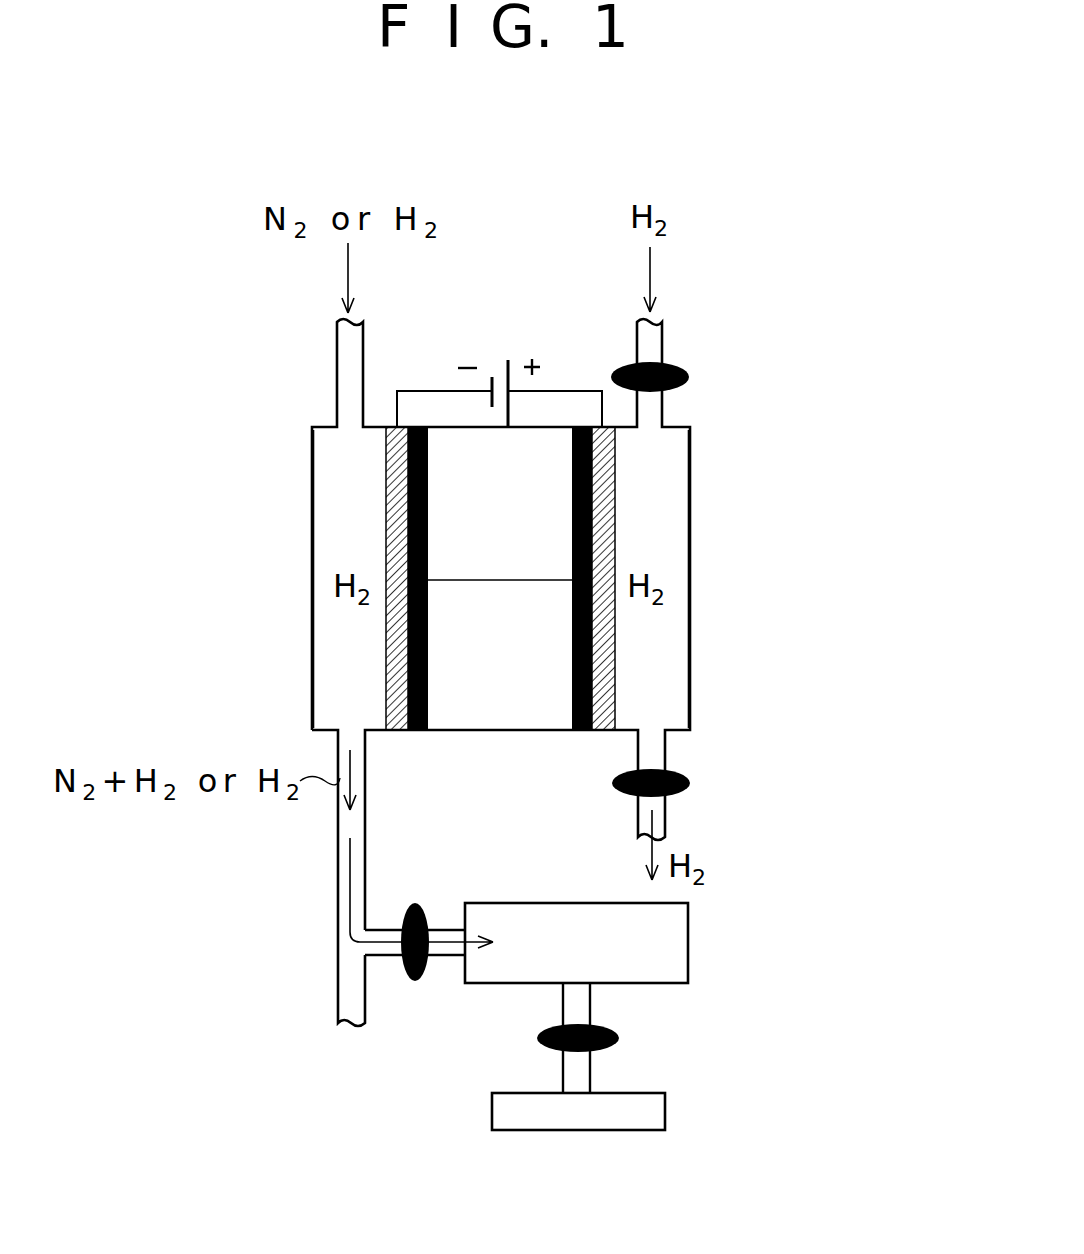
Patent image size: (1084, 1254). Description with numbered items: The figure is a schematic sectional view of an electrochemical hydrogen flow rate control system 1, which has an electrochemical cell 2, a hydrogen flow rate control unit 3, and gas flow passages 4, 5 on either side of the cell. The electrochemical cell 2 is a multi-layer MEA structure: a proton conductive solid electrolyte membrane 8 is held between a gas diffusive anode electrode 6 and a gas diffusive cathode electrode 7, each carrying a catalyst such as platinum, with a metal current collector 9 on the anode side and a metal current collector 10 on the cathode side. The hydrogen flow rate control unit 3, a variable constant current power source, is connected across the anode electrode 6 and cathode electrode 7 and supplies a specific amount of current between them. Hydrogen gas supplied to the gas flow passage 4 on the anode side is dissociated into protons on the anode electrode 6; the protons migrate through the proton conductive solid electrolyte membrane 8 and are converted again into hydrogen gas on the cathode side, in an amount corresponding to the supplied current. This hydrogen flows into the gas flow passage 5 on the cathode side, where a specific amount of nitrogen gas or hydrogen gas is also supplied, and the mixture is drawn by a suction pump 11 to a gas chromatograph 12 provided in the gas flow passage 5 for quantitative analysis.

The electrochemical hydrogen flow rate control system 1 is at (757, 252).
The electrochemical cell 2 is at (490, 614).
The hydrogen flow rate control unit 3 is at (500, 354).
The gas flow passage 4 is at (665, 697).
The gas flow passage 5 is at (340, 695).
The gas diffusive anode electrode 6 is at (615, 537).
The gas diffusive cathode electrode 7 is at (386, 507).
The proton conductive solid electrolyte membrane 8 is at (547, 473).
The metal current collector 9 is at (615, 632).
The metal current collector 10 is at (386, 643).
The suction pump 11 is at (647, 1108).
The gas chromatograph 12 is at (670, 945).